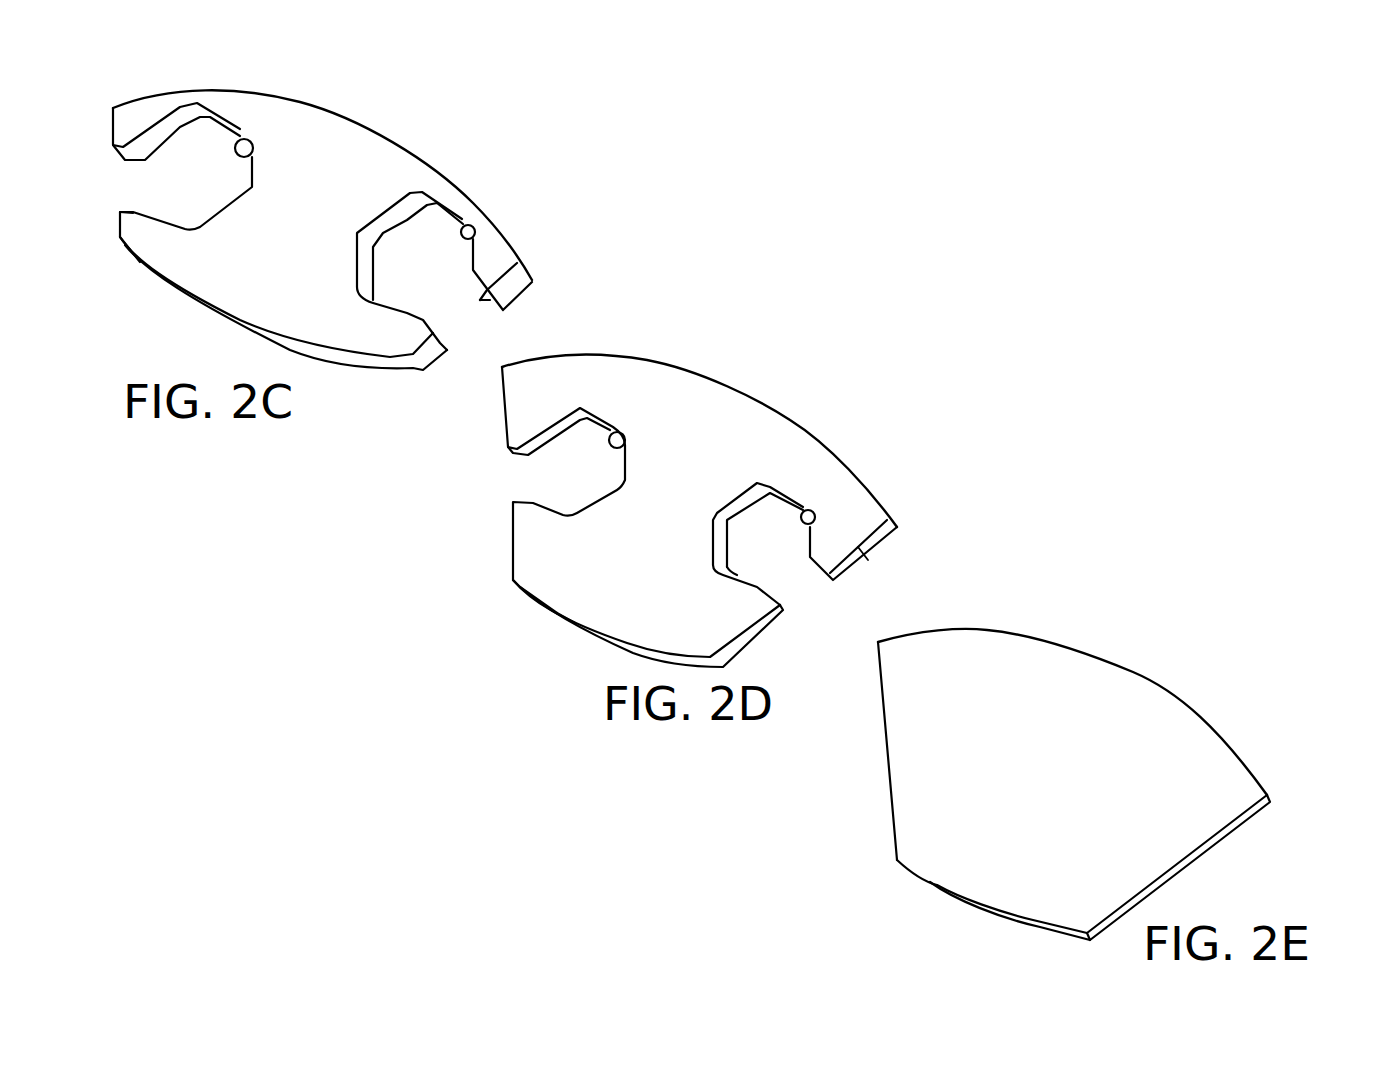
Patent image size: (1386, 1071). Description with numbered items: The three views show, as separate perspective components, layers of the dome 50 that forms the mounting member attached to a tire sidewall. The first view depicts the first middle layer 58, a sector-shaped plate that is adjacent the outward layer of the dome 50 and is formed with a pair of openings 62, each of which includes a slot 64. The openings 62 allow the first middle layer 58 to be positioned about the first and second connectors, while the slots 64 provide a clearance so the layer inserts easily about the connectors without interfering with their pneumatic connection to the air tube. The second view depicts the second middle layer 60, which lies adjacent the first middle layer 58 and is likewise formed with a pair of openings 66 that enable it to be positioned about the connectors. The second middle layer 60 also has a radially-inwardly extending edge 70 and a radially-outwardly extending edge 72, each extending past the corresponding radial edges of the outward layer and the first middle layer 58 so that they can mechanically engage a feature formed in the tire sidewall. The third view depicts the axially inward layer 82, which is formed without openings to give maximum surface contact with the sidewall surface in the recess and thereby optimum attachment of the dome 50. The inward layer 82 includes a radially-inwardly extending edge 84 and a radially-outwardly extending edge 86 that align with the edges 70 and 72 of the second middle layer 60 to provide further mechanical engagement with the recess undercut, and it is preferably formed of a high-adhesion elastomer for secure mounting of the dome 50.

In FIG. 2C, the dome 50 is at (512, 117).
In FIG. 2D, the dome 50 is at (900, 430).
In FIG. 2E, the dome 50 is at (1260, 699).
In FIG. 2C, the first middle layer 58 is at (350, 120).
In FIG. 2D, the second middle layer 60 is at (777, 410).
In FIG. 2C, the openings 62 is at (243, 133).
In FIG. 2C, the slot 64 is at (123, 207).
In FIG. 2D, the openings 66 is at (625, 455).
In FIG. 2D, the radially-inwardly extending edge 70 is at (560, 613).
In FIG. 2D, the radially-outwardly extending edge 72 is at (720, 395).
In FIG. 2E, the axially inward layer 82 is at (1133, 672).
In FIG. 2E, the radially-inwardly extending edge 84 is at (937, 885).
In FIG. 2E, the radially-outwardly extending edge 86 is at (987, 648).